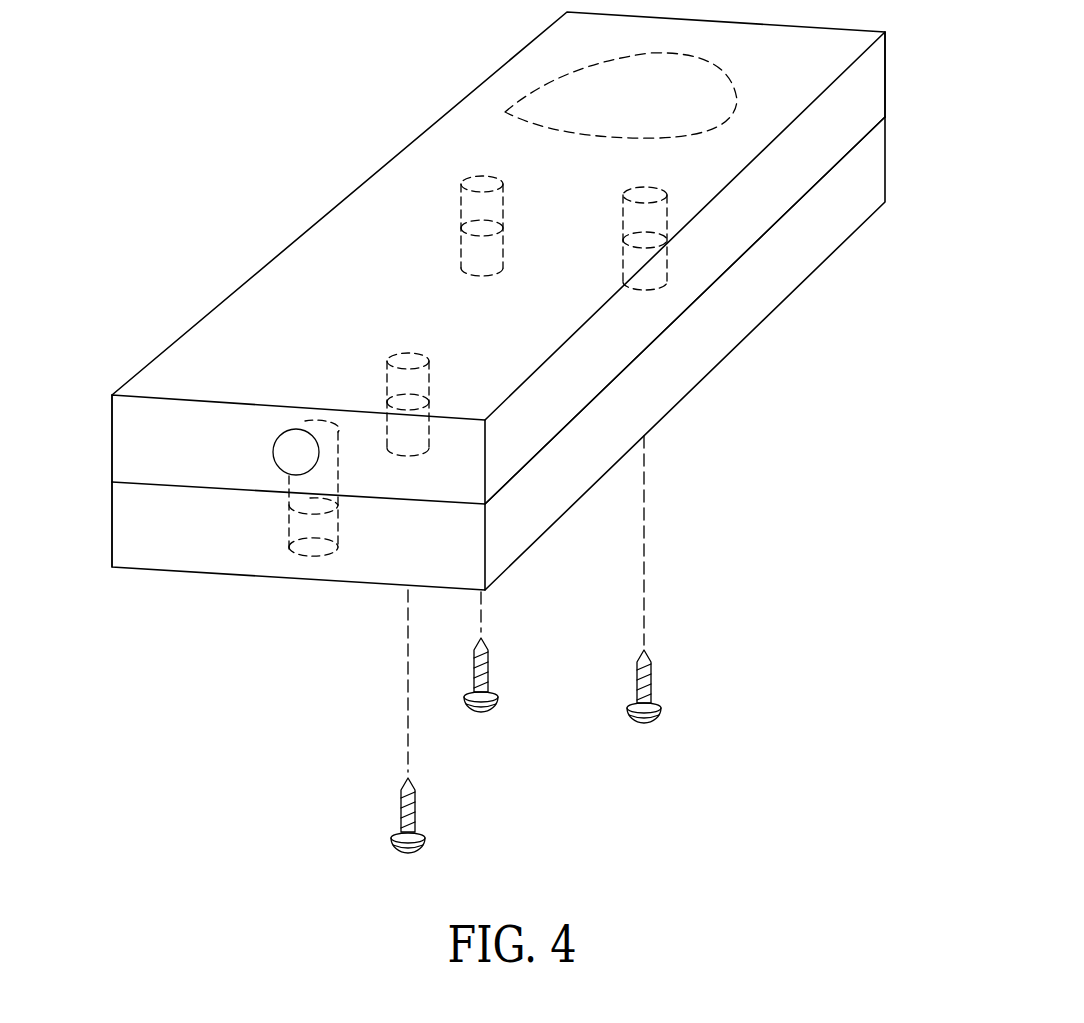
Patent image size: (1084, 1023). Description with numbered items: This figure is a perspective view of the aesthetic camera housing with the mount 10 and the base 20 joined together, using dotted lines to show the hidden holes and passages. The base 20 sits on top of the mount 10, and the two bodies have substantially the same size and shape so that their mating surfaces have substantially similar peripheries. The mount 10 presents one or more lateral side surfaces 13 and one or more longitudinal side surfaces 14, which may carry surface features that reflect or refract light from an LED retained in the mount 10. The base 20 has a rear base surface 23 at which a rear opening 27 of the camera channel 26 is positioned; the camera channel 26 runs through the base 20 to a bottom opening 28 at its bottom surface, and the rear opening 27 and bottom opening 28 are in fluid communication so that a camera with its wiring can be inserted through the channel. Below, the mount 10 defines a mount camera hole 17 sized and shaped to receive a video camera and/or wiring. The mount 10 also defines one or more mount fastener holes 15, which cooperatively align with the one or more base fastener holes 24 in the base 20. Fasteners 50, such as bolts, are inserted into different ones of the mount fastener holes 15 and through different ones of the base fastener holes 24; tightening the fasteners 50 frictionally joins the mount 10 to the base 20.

The mount 10 is at (885, 172).
The base 20 is at (885, 63).
The lateral side surface 13 is at (150, 526).
The rear base surface 23 is at (128, 440).
The longitudinal side surface 14 is at (688, 363).
The mount fastener hole 15 is at (461, 248).
The base fastener hole 24 is at (461, 203).
The camera channel 26 is at (307, 422).
The rear opening 27 is at (273, 442).
The bottom opening 28 is at (290, 503).
The mount camera hole 17 is at (303, 553).
The fastener 50 is at (486, 712).